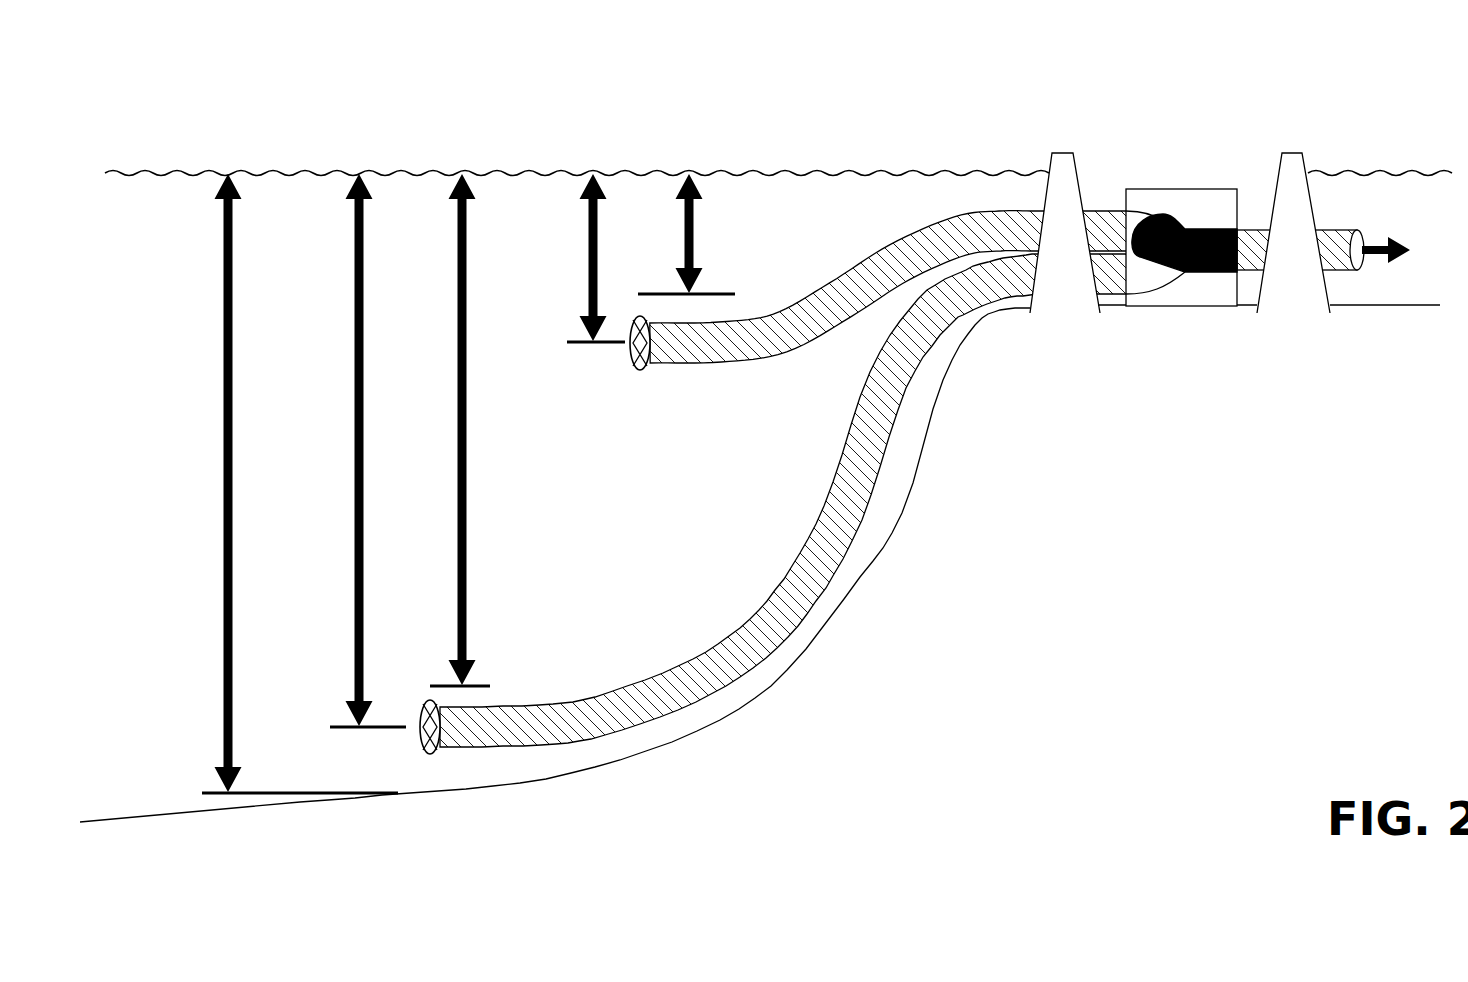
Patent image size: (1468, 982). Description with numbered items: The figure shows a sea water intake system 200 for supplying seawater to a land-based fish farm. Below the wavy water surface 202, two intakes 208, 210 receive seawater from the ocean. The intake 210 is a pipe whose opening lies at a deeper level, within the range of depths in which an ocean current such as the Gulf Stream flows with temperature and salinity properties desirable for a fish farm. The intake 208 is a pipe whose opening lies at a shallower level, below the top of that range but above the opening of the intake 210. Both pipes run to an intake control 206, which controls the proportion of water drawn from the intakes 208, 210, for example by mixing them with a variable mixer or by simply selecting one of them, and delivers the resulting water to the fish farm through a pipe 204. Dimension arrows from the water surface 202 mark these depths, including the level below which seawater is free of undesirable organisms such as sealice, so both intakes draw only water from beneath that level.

The sea water intake system 200 is at (1450, 863).
The water surface 202 is at (845, 172).
The pipe 204 is at (1407, 225).
The intake control 206 is at (1195, 292).
The intake 208 is at (775, 337).
The intake 210 is at (693, 677).